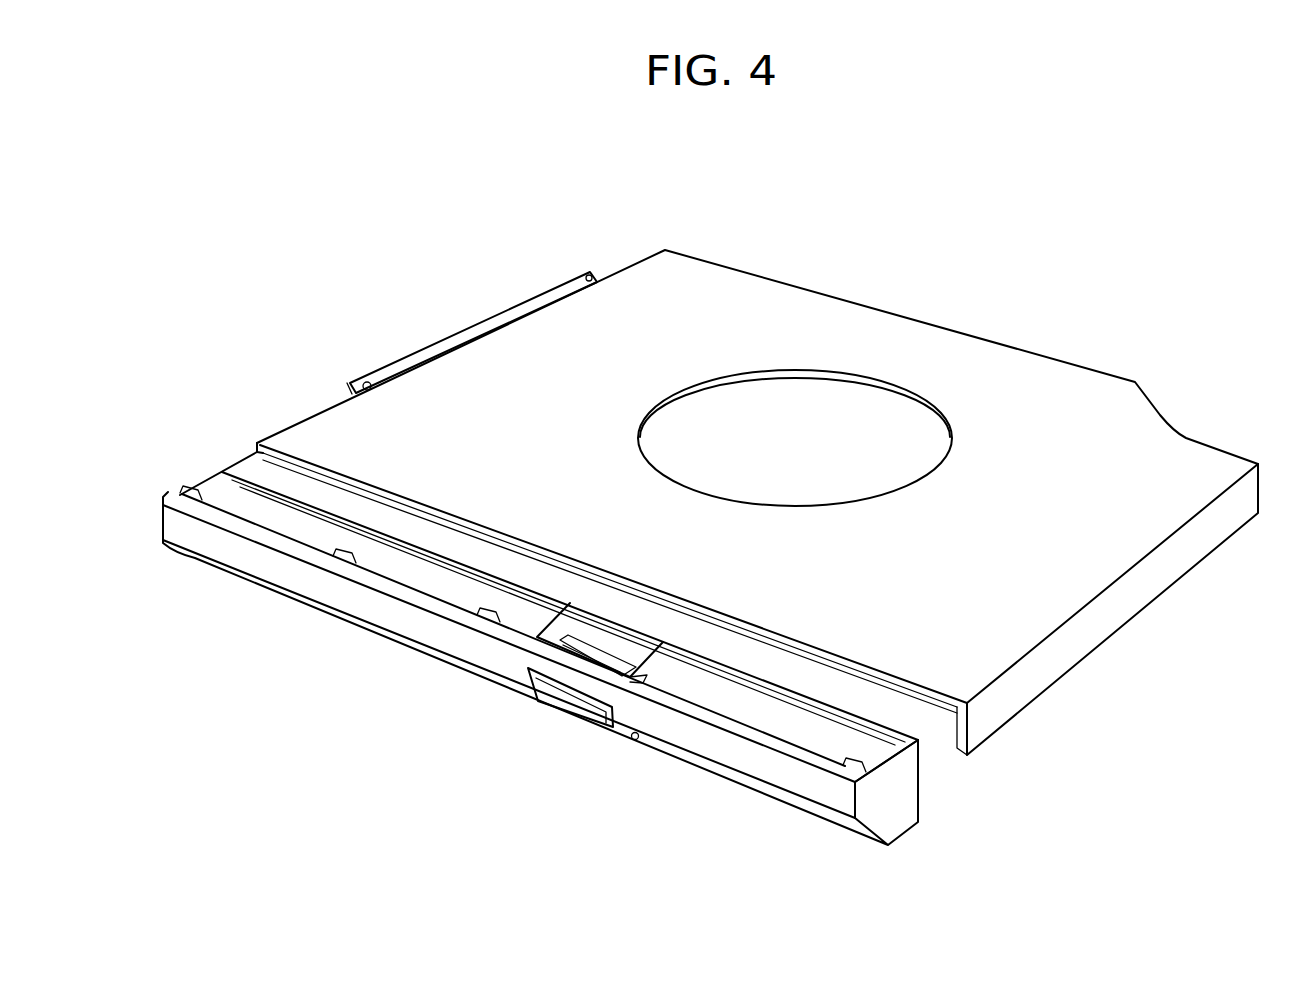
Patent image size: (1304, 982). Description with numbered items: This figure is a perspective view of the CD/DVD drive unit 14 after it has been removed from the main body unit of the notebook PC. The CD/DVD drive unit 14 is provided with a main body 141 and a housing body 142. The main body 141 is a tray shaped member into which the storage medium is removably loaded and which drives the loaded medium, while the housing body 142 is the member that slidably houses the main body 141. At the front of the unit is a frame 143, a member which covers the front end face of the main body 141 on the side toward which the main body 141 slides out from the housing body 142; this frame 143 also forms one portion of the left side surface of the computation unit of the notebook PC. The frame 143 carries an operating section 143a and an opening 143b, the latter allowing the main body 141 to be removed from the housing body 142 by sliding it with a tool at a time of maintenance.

The CD/DVD drive unit 14 is at (922, 262).
The main body 141 is at (898, 698).
The housing body 142 is at (1077, 540).
The frame 143 is at (730, 775).
The operating section 143a is at (573, 705).
The opening 143b is at (635, 741).